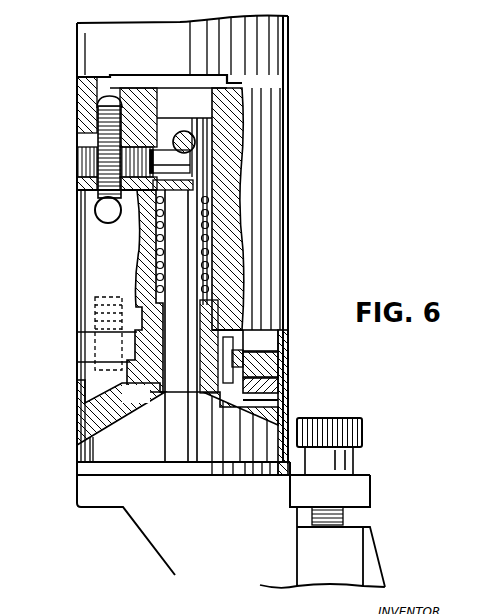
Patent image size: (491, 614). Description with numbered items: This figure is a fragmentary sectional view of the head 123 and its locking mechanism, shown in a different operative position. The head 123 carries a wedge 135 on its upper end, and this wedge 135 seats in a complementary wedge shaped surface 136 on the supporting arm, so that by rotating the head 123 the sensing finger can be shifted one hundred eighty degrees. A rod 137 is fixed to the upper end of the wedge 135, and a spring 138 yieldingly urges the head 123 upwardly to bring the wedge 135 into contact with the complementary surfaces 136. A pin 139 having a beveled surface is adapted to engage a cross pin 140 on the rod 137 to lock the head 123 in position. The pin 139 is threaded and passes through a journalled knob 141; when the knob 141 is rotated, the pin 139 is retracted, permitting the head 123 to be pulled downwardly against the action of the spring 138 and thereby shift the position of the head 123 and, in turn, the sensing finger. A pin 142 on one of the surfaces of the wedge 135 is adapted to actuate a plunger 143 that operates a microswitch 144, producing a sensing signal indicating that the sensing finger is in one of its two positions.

The head 123 is at (152, 527).
The wedge 135 is at (100, 442).
The wedge shaped surface 136 is at (282, 432).
The rod 137 is at (170, 250).
The spring 138 is at (140, 278).
The pin 139 is at (190, 162).
The cross pin 140 is at (178, 133).
The knob 141 is at (77, 133).
The pin 142 is at (287, 390).
The plunger 143 is at (287, 376).
The microswitch 144 is at (287, 340).